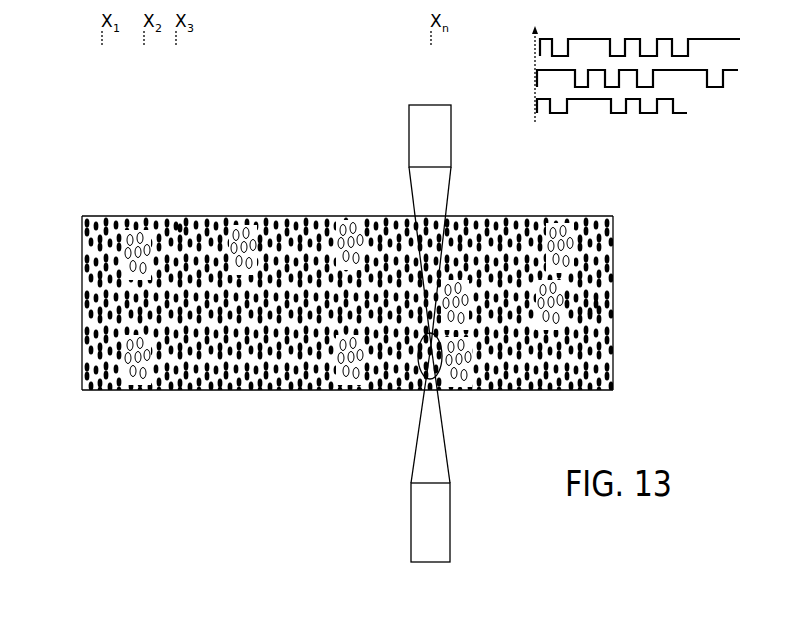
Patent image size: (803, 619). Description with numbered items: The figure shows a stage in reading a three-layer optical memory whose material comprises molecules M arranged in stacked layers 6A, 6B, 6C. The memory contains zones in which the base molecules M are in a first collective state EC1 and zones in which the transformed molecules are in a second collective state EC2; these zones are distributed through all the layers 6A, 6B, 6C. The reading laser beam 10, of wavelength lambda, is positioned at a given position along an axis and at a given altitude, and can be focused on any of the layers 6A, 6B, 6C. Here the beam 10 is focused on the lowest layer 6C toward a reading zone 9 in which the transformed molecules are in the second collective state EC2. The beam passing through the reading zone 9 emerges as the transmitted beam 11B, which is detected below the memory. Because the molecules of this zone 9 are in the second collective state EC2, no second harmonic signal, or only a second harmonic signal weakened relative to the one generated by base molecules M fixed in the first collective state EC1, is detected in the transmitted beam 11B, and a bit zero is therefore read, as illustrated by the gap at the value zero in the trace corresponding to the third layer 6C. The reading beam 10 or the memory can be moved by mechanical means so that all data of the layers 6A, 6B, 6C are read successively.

The base molecules M is at (98, 240).
The reading zone 9 is at (180, 225).
The reading laser beam 10 is at (447, 183).
The transmitted beam 11B is at (447, 530).
The layer 6A is at (607, 245).
The layer 6B is at (600, 304).
The layer 6C is at (603, 375).
The first collective state EC1 is at (168, 430).
The second collective state EC2 is at (558, 230).